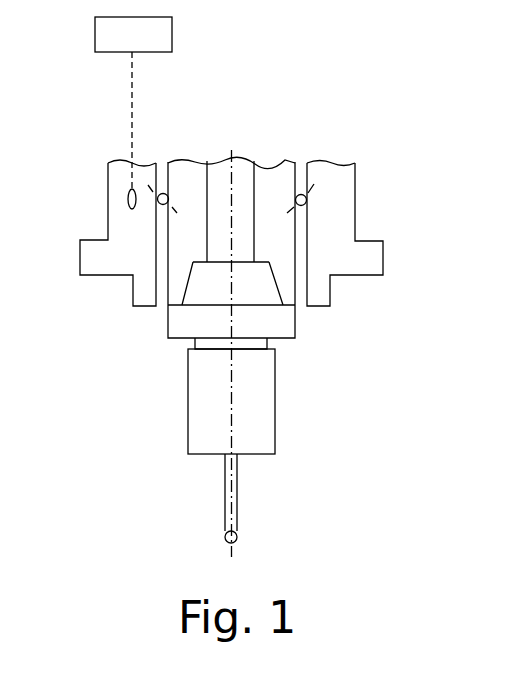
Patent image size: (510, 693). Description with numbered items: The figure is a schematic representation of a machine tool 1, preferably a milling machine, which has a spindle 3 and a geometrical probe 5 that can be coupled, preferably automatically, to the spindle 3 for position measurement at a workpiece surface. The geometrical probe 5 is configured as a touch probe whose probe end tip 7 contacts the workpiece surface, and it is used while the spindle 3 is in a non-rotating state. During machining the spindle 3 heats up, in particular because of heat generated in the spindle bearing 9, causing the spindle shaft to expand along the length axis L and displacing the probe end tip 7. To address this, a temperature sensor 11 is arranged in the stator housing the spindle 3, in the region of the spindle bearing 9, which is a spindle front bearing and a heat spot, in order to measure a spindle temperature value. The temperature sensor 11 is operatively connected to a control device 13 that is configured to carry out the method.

The machine tool 1 is at (360, 126).
The spindle 3 is at (296, 216).
The geometrical probe 5 is at (248, 494).
The probe end tip 7 is at (237, 536).
The spindle bearing 9 is at (306, 200).
The temperature sensor 11 is at (129, 195).
The control device 13 is at (172, 25).
The length axis L is at (233, 152).